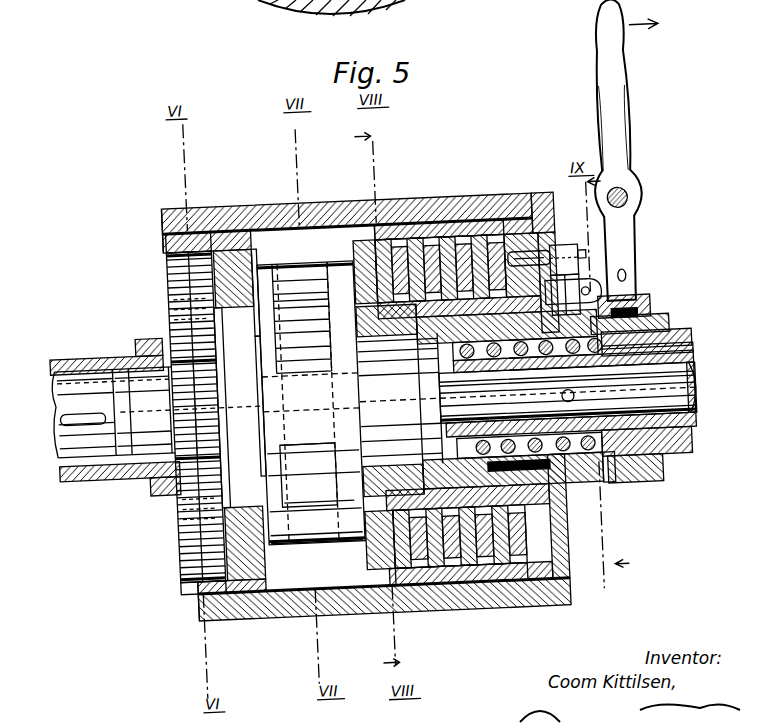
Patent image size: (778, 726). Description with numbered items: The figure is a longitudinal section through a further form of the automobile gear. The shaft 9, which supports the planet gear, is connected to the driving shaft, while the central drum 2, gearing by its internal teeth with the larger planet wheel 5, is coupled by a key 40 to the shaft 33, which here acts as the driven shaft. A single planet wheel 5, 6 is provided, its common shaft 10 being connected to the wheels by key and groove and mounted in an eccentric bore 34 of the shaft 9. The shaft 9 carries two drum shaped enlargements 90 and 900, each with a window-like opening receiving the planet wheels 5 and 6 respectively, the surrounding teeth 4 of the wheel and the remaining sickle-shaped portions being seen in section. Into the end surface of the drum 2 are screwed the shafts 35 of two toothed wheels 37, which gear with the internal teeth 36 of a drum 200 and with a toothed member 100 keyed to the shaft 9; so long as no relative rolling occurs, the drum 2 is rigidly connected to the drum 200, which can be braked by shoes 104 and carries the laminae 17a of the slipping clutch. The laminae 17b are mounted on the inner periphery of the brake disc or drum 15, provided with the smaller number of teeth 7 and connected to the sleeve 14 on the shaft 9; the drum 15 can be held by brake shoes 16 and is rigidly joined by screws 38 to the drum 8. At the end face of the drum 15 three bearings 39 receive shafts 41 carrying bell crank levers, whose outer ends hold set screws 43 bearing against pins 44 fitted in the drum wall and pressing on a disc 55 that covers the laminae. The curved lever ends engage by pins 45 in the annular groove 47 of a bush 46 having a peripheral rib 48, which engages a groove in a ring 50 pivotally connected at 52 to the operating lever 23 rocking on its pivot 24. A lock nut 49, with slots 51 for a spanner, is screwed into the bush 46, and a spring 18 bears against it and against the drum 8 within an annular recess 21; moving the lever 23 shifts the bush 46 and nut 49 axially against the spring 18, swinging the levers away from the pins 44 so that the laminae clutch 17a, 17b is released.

The drum 2 is at (236, 226).
The gear teeth 4 is at (300, 296).
The larger planet wheel 5 is at (262, 243).
The smaller planet wheel 6 is at (362, 372).
The teeth 7 is at (380, 320).
The drum 8 is at (462, 232).
The shaft 9 is at (134, 445).
The common shaft 10 is at (202, 470).
The sleeve 14 is at (670, 467).
The brake disc 15 is at (490, 236).
The brake shoes 16 is at (410, 215).
The laminae 17a is at (432, 240).
The laminae 17b is at (480, 575).
The spring 18 is at (567, 462).
The annular recess 21 is at (604, 493).
The operating lever 23 is at (626, 132).
The pivot 24 is at (634, 202).
The shaft 33 is at (94, 443).
The eccentric bore 34 is at (132, 357).
The shafts 35 is at (172, 300).
The internal teeth 36 is at (176, 210).
The toothed wheels 37 is at (176, 258).
The screws 38 is at (556, 470).
The bearings 39 is at (596, 295).
The key 40 is at (70, 357).
The shafts 41 is at (580, 290).
The set screws 43 is at (568, 270).
The pins 44 is at (548, 256).
The pins 45 is at (561, 404).
The bush 46 is at (656, 327).
The annular groove 47 is at (592, 366).
The annular rib 48 is at (628, 492).
The lock nut 49 is at (660, 343).
The ring 50 is at (646, 308).
The slots 51 is at (672, 357).
The pivotal connection 52 is at (632, 283).
The disc 55 is at (524, 240).
The drum shaped enlargement 90 is at (305, 525).
The toothed member 100 is at (180, 440).
The brake shoes 104 is at (238, 212).
The drum 200 is at (208, 230).
The drum shaped enlargement 900 is at (440, 600).